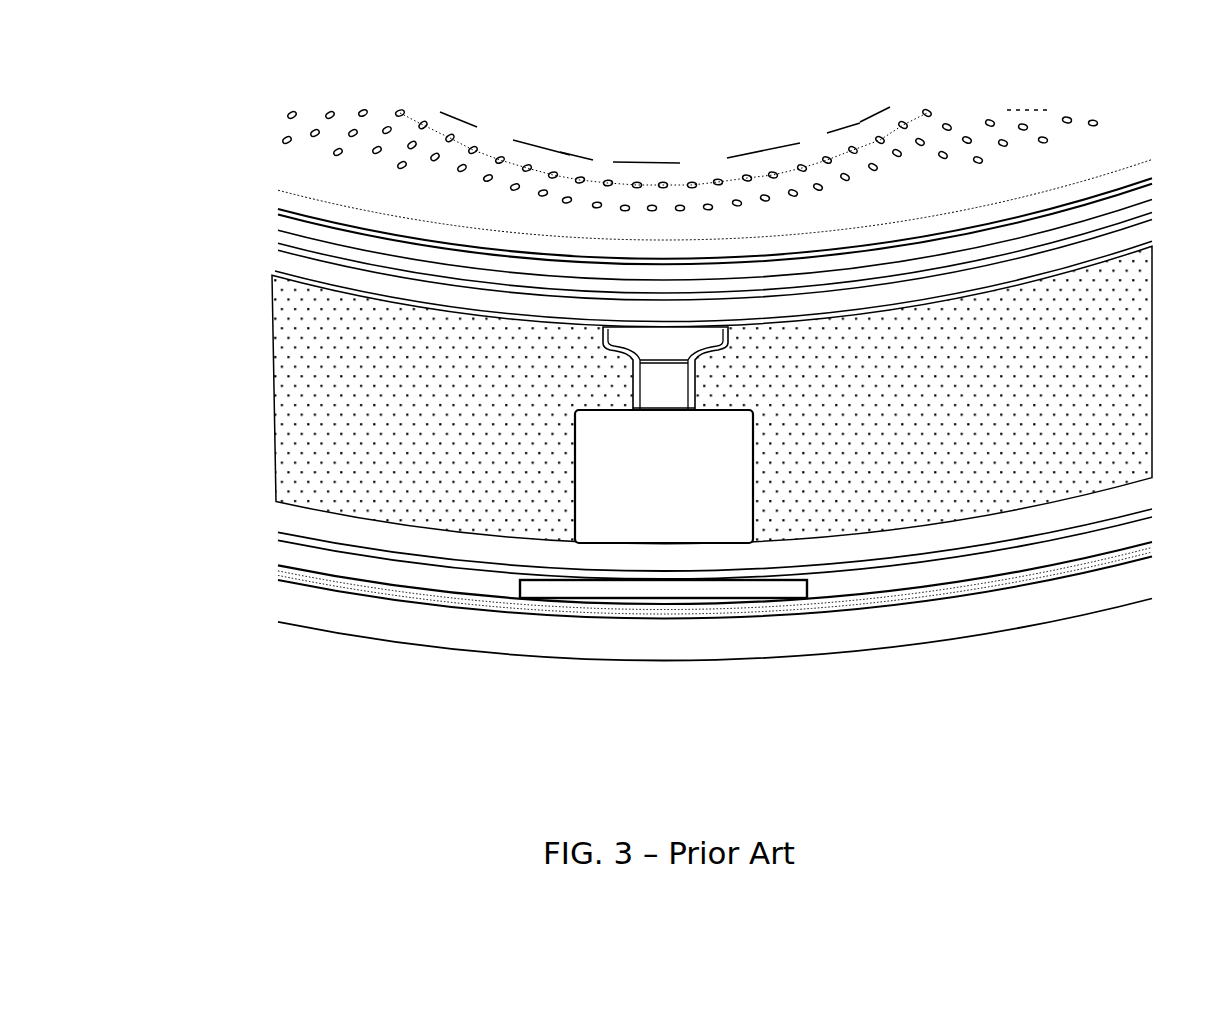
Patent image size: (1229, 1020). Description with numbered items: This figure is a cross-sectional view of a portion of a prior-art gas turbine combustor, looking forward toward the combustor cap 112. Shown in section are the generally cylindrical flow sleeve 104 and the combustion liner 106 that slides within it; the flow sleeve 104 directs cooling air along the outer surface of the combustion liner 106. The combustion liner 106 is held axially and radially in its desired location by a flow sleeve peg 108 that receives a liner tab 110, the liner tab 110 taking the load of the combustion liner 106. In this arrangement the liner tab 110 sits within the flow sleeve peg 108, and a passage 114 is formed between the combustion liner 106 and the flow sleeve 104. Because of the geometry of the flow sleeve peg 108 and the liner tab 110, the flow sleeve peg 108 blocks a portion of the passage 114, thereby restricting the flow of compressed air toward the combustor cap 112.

The flow sleeve 104 is at (302, 561).
The combustion liner 106 is at (285, 243).
The flow sleeve peg 108 is at (687, 500).
The liner tab 110 is at (660, 397).
The combustor cap 112 is at (1100, 148).
The passage 114 is at (416, 402).